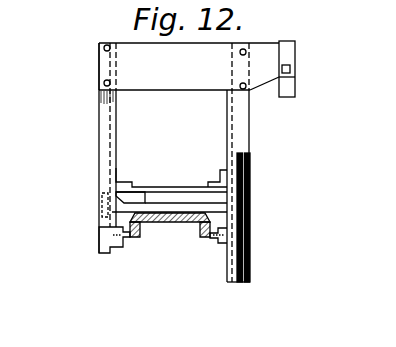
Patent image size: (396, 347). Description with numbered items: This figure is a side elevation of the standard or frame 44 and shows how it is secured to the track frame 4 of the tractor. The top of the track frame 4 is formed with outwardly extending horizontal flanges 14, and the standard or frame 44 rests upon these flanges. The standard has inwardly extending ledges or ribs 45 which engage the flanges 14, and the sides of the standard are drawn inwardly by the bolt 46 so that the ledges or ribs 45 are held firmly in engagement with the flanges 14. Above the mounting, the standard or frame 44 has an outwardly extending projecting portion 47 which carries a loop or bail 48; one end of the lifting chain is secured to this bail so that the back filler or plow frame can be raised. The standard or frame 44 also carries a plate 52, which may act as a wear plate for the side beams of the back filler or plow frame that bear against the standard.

The track frame 4 is at (167, 223).
The outwardly extending horizontal flanges 14 is at (128, 250).
The standard or frame 44 is at (99, 116).
The inwardly extending ledges or ribs 45 is at (97, 232).
The bolt 46 is at (116, 192).
The outwardly extending projecting portion 47 is at (262, 62).
The loop or bail 48 is at (290, 90).
The plate 52 is at (252, 200).